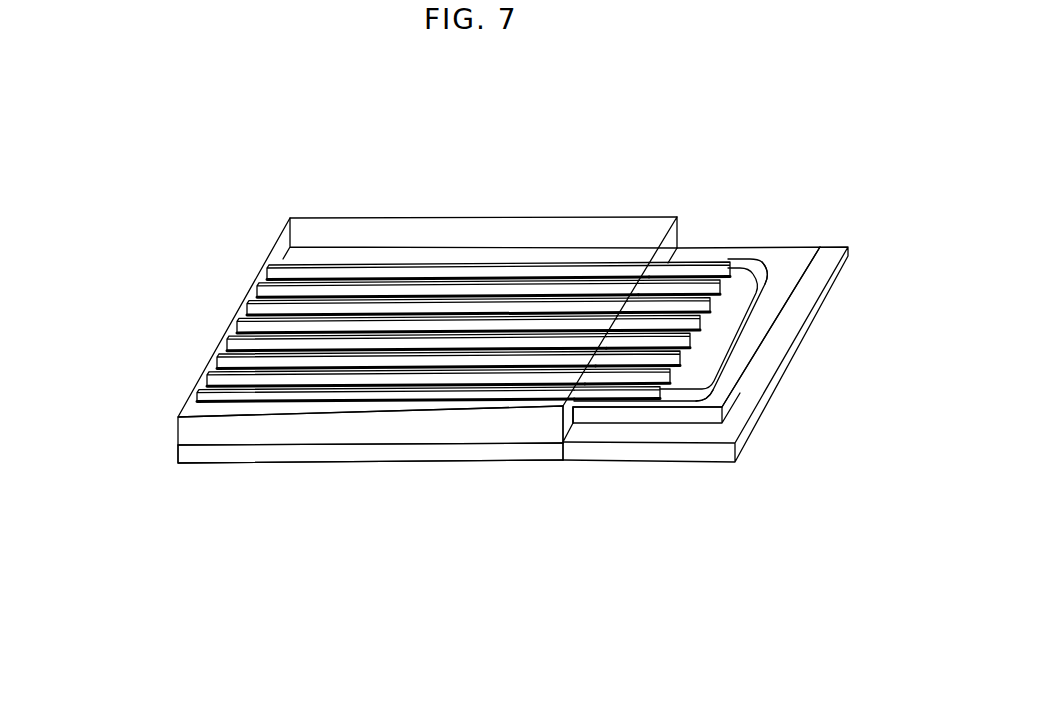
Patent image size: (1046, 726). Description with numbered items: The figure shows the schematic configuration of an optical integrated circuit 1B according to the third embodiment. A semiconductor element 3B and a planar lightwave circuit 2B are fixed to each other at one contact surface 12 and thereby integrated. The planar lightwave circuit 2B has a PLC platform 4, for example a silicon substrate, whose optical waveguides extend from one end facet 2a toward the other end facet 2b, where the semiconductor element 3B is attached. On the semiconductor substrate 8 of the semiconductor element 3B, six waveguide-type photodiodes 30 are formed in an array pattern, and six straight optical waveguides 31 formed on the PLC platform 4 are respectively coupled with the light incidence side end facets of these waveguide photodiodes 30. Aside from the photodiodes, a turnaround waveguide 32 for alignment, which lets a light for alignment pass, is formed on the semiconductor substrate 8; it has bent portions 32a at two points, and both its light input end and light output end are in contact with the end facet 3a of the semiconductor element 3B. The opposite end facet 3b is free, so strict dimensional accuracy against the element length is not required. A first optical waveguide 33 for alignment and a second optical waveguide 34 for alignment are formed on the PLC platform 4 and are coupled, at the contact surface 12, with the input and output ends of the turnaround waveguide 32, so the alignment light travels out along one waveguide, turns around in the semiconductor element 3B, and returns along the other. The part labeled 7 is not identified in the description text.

The optical integrated circuit 1B is at (521, 184).
The planar lightwave circuit 2B is at (340, 465).
The end facet 2a is at (178, 440).
The end facet 2b is at (681, 242).
The PLC platform 4 is at (240, 465).
The first optical waveguide for alignment 33 is at (404, 262).
The second optical waveguide for alignment 34 is at (437, 398).
The straight optical waveguides 31 is at (255, 272).
The waveguide-type photodiodes 30 is at (694, 268).
The turnaround waveguide for alignment 32 is at (720, 350).
The bent portions 32a is at (768, 266).
The end facet 3a is at (566, 412).
The end facet 3b is at (772, 336).
The semiconductor element 3B is at (637, 412).
The mounting substrate 7 is at (740, 416).
The semiconductor substrate 8 is at (767, 305).
The contact surface 12 is at (563, 463).